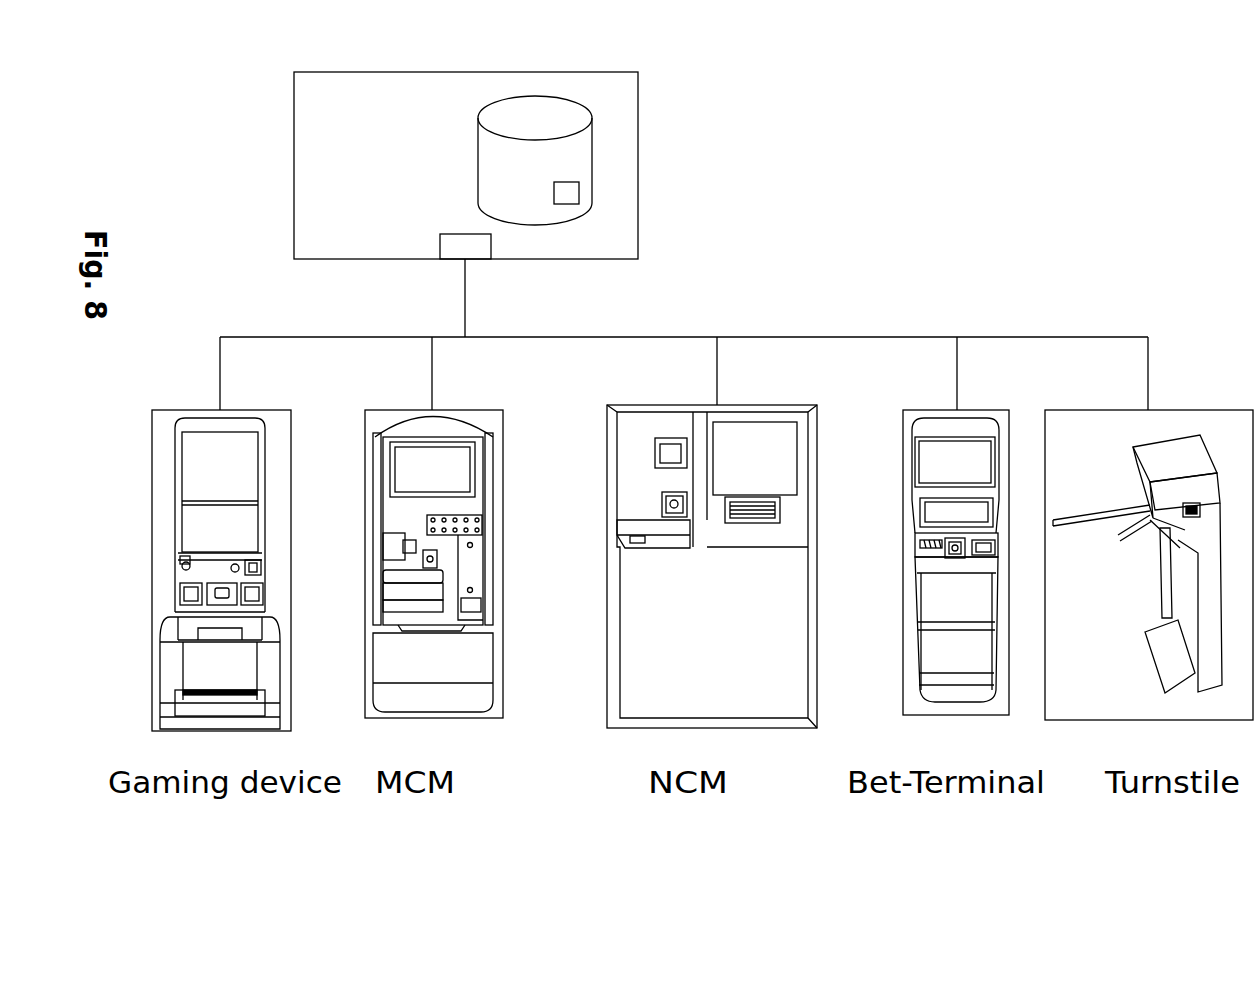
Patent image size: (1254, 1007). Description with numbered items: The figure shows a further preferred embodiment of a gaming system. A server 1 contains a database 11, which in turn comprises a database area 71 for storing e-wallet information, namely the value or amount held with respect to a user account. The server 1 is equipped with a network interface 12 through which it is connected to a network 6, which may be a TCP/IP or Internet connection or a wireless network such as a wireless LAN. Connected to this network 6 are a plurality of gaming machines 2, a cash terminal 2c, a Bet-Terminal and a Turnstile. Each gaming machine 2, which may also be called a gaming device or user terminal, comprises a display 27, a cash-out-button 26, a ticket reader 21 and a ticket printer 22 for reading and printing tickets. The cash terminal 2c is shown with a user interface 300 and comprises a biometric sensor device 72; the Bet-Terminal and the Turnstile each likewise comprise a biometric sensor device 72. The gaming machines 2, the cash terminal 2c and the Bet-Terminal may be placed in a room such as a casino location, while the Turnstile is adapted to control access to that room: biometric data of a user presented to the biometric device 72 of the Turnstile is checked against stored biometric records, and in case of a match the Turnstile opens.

The server 1 is at (696, 112).
The database 11 is at (585, 148).
The database area 71 is at (579, 192).
The network interface 12 is at (453, 242).
The network 6 is at (684, 335).
The gaming machine 2 is at (298, 412).
The cash terminal 2c is at (691, 544).
The user interface 300 is at (762, 418).
The display 27 is at (190, 516).
The cash-out-button 26 is at (182, 557).
The ticket reader 21 is at (620, 528).
The ticket printer 22 is at (975, 550).
The biometric (sensor) device 72 is at (262, 601).